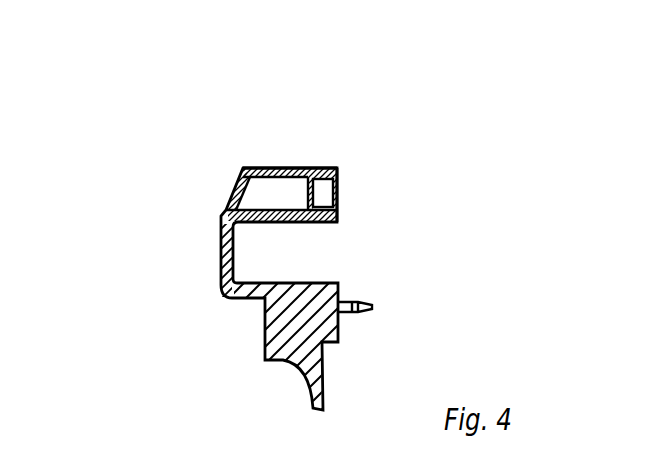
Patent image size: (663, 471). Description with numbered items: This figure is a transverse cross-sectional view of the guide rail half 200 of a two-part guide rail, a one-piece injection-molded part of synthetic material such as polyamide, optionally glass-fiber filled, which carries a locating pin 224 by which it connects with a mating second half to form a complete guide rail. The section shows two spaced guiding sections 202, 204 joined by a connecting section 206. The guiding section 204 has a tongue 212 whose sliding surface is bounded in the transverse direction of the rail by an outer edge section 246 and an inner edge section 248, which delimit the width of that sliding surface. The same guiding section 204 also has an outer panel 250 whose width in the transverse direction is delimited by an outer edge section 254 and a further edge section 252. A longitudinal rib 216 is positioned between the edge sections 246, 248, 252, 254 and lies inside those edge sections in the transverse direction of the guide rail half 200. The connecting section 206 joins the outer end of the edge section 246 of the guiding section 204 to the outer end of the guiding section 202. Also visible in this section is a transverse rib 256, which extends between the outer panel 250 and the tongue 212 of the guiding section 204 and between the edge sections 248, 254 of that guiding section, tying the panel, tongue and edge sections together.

The guide rail half 200 is at (326, 217).
The guiding section 202 is at (307, 288).
The guiding section 204 is at (343, 193).
The connecting section 206 is at (222, 257).
The tongue 212 is at (277, 216).
The longitudinal rib 216 is at (305, 190).
The locating pin 224 is at (343, 315).
The outer edge section 246 is at (227, 217).
The inner edge section 248 is at (343, 214).
The outer panel 250 is at (267, 167).
The edge section 252 is at (240, 167).
The outer edge section 254 is at (333, 167).
The transverse rib 256 is at (240, 195).